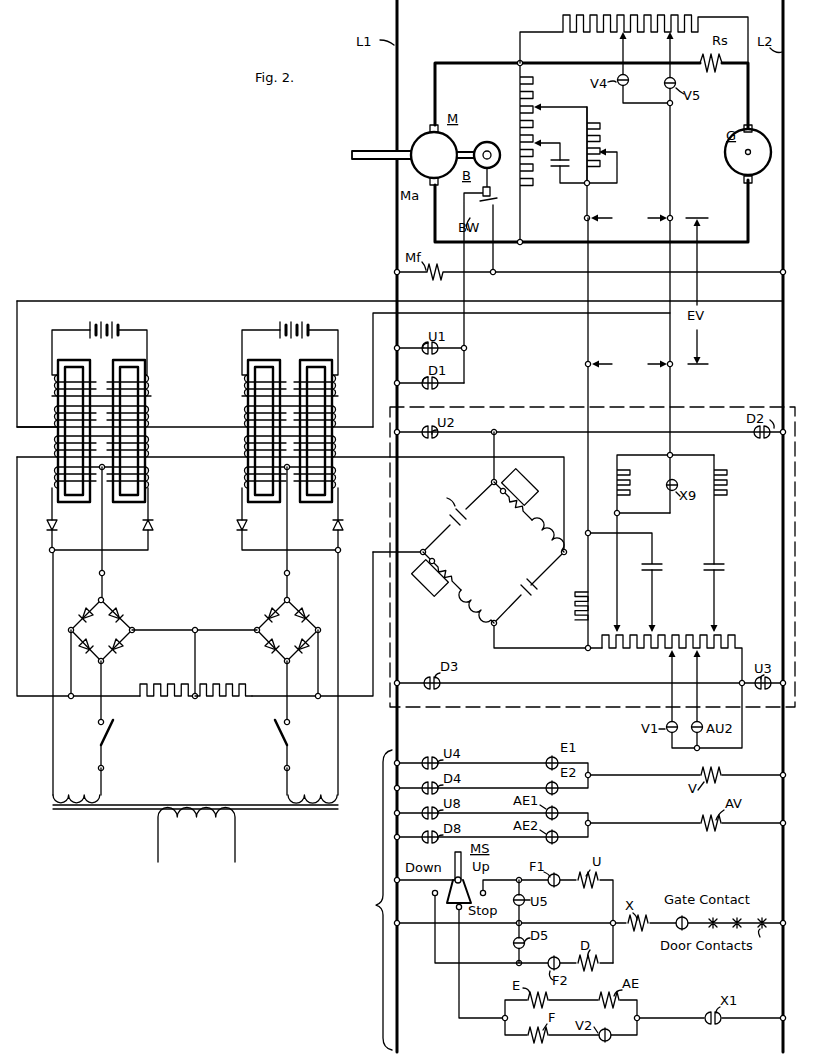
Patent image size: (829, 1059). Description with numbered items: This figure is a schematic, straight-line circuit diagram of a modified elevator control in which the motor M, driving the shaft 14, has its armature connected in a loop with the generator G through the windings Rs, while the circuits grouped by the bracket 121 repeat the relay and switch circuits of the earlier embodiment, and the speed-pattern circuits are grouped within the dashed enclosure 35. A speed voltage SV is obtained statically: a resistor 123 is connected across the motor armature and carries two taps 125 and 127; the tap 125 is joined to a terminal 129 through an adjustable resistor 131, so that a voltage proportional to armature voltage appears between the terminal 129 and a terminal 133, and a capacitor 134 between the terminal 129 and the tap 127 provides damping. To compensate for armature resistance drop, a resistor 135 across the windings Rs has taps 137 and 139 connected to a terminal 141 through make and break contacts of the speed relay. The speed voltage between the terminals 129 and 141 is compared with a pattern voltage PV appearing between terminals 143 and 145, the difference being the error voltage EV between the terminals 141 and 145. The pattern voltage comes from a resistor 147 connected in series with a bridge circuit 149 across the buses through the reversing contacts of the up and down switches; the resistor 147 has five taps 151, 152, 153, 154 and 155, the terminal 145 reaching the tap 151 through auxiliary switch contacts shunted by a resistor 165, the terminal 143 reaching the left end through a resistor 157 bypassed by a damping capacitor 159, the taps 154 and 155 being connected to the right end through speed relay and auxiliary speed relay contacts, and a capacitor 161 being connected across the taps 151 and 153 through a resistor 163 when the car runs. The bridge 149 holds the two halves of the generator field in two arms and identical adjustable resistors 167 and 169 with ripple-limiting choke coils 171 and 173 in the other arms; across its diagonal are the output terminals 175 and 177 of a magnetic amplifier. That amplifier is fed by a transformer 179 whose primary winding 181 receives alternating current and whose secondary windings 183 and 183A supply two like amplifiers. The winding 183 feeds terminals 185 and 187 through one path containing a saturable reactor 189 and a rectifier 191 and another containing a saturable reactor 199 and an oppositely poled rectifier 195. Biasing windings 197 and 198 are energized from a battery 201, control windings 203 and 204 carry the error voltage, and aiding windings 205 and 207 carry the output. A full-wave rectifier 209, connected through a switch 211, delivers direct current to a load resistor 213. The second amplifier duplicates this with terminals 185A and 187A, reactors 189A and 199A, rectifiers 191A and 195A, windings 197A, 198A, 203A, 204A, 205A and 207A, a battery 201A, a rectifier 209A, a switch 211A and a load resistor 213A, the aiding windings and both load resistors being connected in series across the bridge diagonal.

The shaft 14 is at (378, 152).
The speed control unit 35 is at (550, 406).
The bracket 121 is at (372, 905).
The resistor 123 is at (519, 101).
The tap 125 is at (560, 135).
The tap 127 is at (560, 154).
The terminal 129 is at (584, 219).
The adjustable resistor 131 is at (607, 162).
The terminal 133 is at (520, 63).
The capacitor 134 is at (562, 172).
The resistor 135 is at (563, 26).
The tap 137 is at (627, 67).
The tap 139 is at (658, 272).
The terminal 141 is at (688, 252).
The terminal 143 is at (584, 365).
The terminal 145 is at (674, 367).
The resistor 147 is at (663, 659).
The bridge circuit 149 is at (309, 541).
The tap 151 is at (630, 572).
The tap 152 is at (655, 632).
The tap 153 is at (715, 632).
The tap 154 is at (669, 653).
The tap 155 is at (700, 654).
The resistor 157 is at (575, 619).
The capacitor 159 is at (657, 570).
The capacitor 161 is at (724, 568).
The resistor 163 is at (727, 486).
The resistor 165 is at (627, 493).
The adjustable resistor 167 is at (446, 592).
The adjustable resistor 169 is at (503, 499).
The choke coil 171 is at (477, 595).
The choke coil 173 is at (541, 543).
The output terminal 175 is at (72, 709).
The output terminal 177 is at (318, 701).
The transformer 179 is at (123, 810).
The primary winding 181 is at (213, 828).
The secondary winding 183 is at (70, 785).
The secondary winding 183A is at (315, 792).
The terminal 185 is at (104, 768).
The terminal 185A is at (284, 768).
The terminal 187 is at (105, 573).
The terminal 187A is at (284, 573).
The saturable reactor 189 is at (56, 482).
The saturable reactor 189A is at (246, 482).
The unidirectional rectifier 191 is at (57, 525).
The unidirectional rectifier 191A is at (236, 528).
The unidirectional rectifier 195 is at (144, 528).
The unidirectional rectifier 195A is at (342, 526).
The control winding 197 is at (55, 385).
The control winding 197A is at (246, 383).
The control winding 198 is at (149, 385).
The control winding 198A is at (334, 384).
The saturable reactor 199 is at (150, 484).
The saturable reactor 199A is at (334, 484).
The battery 201 is at (87, 322).
The battery 201A is at (308, 328).
The control winding 203 is at (56, 422).
The control winding 203A is at (246, 422).
The control winding 204 is at (150, 417).
The control winding 204A is at (334, 414).
The aiding winding 205 is at (56, 449).
The aiding winding 205A is at (246, 449).
The aiding winding 207 is at (150, 449).
The aiding winding 207A is at (334, 449).
The full-wave rectifier 209 is at (110, 612).
The full-wave rectifier 209A is at (271, 608).
The switch 211 is at (114, 730).
The switch 211A is at (272, 731).
The load resistor 213 is at (171, 682).
The load resistor 213A is at (222, 685).